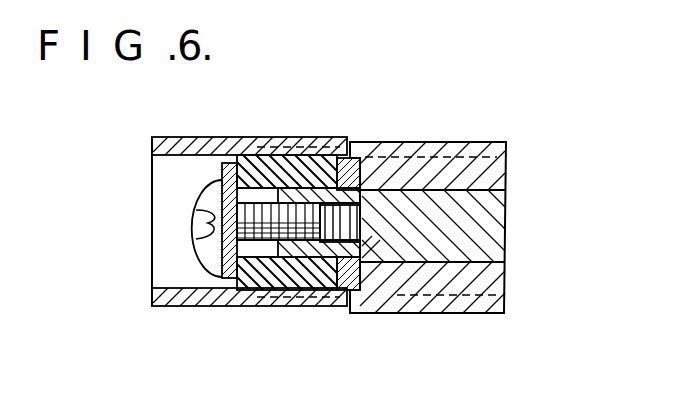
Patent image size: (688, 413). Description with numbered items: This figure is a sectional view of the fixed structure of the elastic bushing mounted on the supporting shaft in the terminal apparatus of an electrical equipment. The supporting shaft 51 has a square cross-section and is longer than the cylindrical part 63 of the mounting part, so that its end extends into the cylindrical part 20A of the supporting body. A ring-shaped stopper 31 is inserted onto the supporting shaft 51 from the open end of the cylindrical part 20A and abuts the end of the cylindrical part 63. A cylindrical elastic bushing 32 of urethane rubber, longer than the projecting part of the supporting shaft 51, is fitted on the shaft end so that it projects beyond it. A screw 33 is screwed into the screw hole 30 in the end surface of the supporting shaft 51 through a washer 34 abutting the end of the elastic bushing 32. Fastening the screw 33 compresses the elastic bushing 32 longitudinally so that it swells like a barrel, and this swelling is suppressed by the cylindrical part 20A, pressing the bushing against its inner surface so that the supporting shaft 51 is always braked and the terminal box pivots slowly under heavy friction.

The cylindrical part 20A is at (182, 307).
The screw hole 30 is at (362, 220).
The ring-shaped stopper 31 is at (362, 280).
The cylindrical elastic bushing 32 is at (296, 282).
The screw 33 is at (195, 232).
The washer 34 is at (228, 307).
The supporting shaft 51 is at (498, 238).
The cylindrical part 63 is at (427, 307).